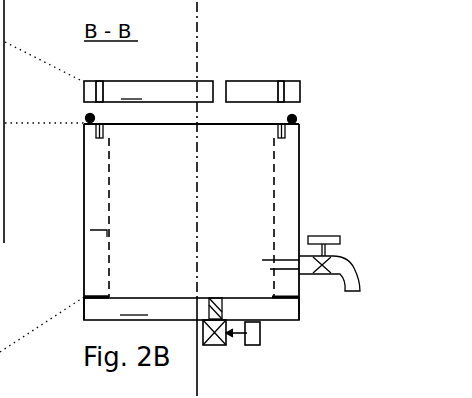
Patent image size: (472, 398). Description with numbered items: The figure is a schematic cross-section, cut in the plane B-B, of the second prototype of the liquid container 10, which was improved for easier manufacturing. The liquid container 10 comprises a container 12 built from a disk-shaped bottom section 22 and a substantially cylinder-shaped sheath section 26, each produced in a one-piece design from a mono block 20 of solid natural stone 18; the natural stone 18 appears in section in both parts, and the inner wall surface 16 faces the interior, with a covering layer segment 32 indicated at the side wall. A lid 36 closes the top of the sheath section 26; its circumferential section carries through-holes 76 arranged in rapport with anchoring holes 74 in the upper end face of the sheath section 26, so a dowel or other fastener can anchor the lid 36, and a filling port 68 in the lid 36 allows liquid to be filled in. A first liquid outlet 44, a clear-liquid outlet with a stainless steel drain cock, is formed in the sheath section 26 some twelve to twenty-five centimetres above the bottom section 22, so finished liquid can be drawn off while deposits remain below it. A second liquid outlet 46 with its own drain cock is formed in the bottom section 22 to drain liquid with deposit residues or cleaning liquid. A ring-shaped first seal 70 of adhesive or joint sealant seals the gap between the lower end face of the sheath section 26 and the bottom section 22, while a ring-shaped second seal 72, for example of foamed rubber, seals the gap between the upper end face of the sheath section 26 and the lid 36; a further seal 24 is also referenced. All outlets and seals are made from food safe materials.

The liquid container 10 is at (354, 157).
The container 12 is at (352, 206).
The inner wall surface 16 is at (110, 196).
The natural stone 18 is at (119, 200).
The mono block 20 is at (299, 167).
The bottom section 22 is at (225, 320).
The seal 24 is at (299, 305).
The sheath section 26 is at (327, 222).
The covering layer segment 32 is at (299, 197).
The lid 36 is at (302, 95).
The first liquid outlet 44 is at (274, 259).
The second liquid outlet 46 is at (216, 318).
The filling port 68 is at (217, 96).
The first seal 70 is at (84, 295).
The second seal 72 is at (86, 117).
The anchoring hole 74 is at (95, 129).
The through-hole 76 is at (84, 89).